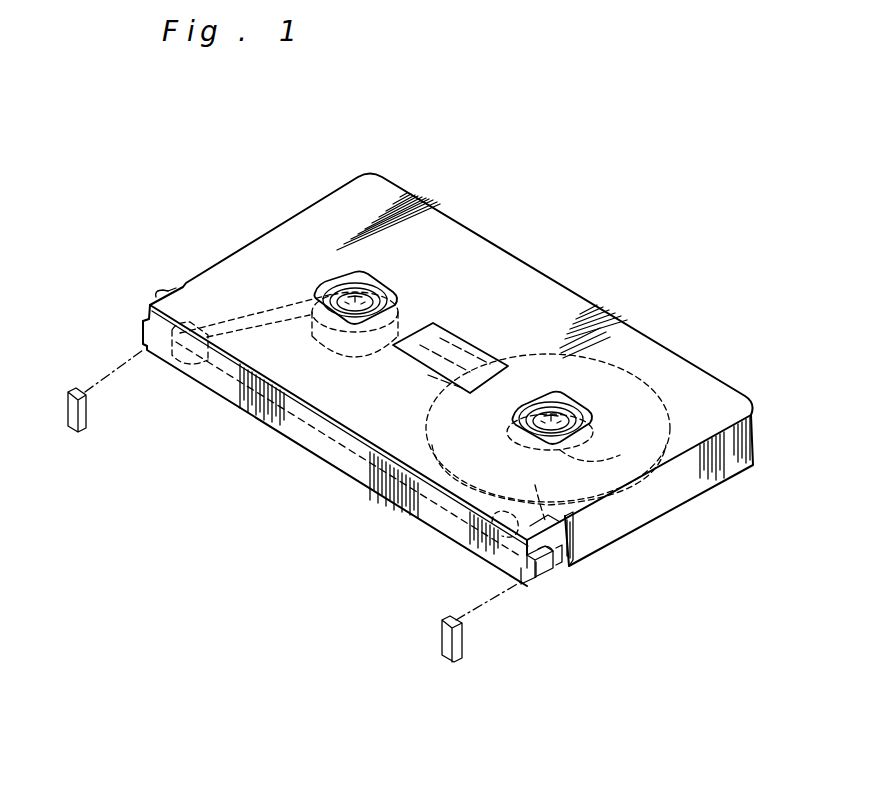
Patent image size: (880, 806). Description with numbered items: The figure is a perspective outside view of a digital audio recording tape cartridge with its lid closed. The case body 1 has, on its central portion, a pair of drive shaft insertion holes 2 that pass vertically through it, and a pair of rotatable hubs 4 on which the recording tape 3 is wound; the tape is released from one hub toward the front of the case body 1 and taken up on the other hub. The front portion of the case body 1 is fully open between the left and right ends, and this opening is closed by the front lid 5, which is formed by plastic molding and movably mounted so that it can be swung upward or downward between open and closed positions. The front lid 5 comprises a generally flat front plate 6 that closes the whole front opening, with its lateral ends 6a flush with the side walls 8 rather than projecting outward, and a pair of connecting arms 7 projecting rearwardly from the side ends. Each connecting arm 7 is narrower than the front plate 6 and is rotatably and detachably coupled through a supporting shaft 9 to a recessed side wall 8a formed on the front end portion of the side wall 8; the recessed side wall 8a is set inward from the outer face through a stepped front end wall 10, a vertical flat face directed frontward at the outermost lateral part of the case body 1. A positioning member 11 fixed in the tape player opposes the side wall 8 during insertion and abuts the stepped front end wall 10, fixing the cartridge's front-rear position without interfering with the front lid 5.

The case body 1 is at (533, 270).
The drive shaft insertion hole 2 is at (357, 298).
The recording tape 3 is at (278, 296).
The rotatable hub 4 is at (380, 333).
The front lid 5 is at (292, 441).
The front plate 6 is at (342, 455).
The lateral end of the front plate 6a is at (522, 556).
The connecting arm 7 is at (140, 326).
The side wall 8 is at (633, 517).
The recessed side wall 8a is at (170, 296).
The supporting shaft 9 is at (539, 512).
The stepped front end wall 10 is at (184, 287).
The positioning member 11 is at (70, 392).